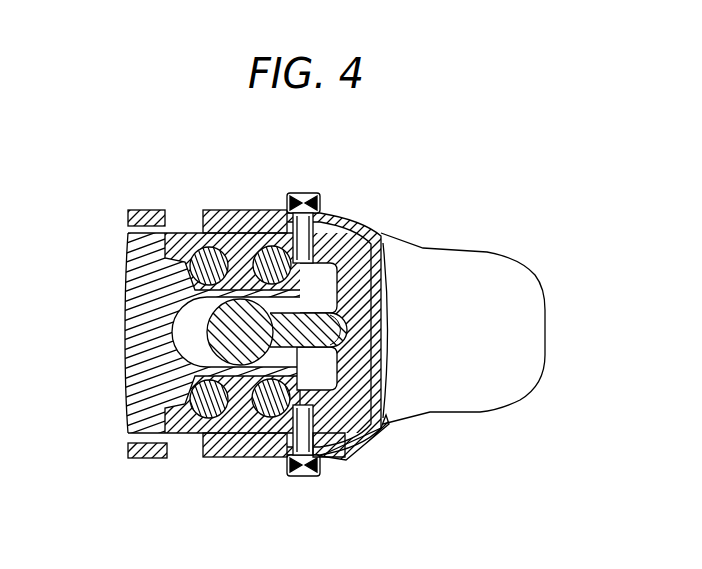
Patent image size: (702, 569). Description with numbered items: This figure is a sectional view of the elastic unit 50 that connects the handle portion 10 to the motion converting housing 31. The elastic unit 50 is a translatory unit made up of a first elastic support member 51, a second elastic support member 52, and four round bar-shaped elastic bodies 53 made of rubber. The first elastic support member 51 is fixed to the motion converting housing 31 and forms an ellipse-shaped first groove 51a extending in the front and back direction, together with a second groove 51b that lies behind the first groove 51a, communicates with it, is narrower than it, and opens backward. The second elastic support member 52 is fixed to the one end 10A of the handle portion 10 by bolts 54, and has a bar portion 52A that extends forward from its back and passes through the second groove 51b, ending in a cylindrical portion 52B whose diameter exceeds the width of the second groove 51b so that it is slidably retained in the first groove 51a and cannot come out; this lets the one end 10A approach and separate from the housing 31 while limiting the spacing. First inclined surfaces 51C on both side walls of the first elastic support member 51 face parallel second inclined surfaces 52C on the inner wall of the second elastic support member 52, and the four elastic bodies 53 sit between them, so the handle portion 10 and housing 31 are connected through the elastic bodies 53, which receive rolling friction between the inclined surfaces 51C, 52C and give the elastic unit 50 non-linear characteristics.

The handle portion 10 is at (483, 385).
The one end of handle portion 10A is at (358, 432).
The motion converting housing 31 is at (152, 210).
The elastic unit 50 is at (133, 435).
The first elastic support member 51 is at (240, 350).
The first groove 51a is at (150, 287).
The second groove 51b is at (300, 339).
The first inclined surfaces 51C is at (193, 262).
The second elastic support member 52 is at (256, 210).
The bar portion 52A is at (383, 240).
The cylindrical portion 52B is at (190, 318).
The second inclined surfaces 52C is at (180, 237).
The elastic bodies 53 is at (337, 443).
The bolts 54 is at (305, 200).